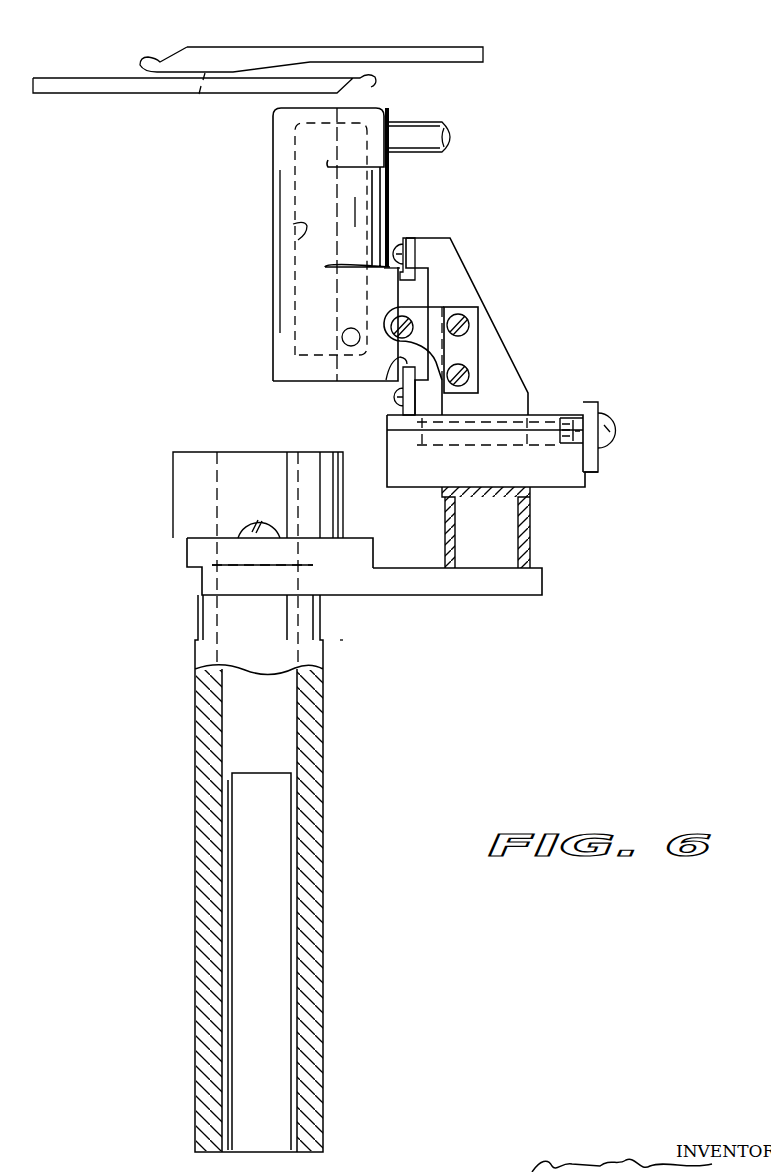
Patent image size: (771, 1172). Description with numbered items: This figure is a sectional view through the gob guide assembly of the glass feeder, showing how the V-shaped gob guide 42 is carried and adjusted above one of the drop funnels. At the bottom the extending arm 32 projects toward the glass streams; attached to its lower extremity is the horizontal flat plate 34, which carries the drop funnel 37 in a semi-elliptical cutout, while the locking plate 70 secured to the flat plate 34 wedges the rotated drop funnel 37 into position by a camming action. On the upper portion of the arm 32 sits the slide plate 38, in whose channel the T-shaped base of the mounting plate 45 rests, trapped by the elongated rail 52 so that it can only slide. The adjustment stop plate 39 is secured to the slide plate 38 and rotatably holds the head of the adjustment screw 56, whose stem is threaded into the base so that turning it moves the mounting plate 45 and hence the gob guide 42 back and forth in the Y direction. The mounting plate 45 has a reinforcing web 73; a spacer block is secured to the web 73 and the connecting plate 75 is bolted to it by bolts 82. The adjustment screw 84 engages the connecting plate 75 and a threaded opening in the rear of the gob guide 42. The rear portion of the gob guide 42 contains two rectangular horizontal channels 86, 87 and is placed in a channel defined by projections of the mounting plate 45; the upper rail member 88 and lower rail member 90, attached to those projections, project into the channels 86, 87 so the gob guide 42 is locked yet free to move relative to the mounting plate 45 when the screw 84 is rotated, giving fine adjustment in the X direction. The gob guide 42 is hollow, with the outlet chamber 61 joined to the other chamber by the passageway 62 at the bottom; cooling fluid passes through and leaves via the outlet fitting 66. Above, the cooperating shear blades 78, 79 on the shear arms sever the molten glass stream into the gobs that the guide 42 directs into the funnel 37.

The extending arm 32 is at (527, 543).
The horizontal flat plate 34 is at (430, 596).
The drop funnel 37 is at (180, 480).
The slide plate 38 is at (568, 480).
The adjustment stop plate 39 is at (600, 408).
The V-shaped gob guide 42 is at (272, 182).
The mounting plate 45 is at (425, 238).
The elongated rail 52 is at (542, 417).
The adjustment screw 56 is at (613, 438).
The chamber 61 is at (293, 228).
The passageway 62 is at (357, 337).
The outlet fitting 66 is at (430, 137).
The locking plate 70 is at (207, 555).
The web 73 is at (513, 348).
The connecting plate 75 is at (480, 307).
The shear blade 78 is at (57, 93).
The shear blade 79 is at (453, 55).
The bolt 82 is at (470, 328).
The adjustment screw 84 is at (417, 325).
The rectangular horizontal channel 86 is at (403, 270).
The rectangular horizontal channel 87 is at (392, 378).
The upper rail member 88 is at (405, 240).
The lower rail member 90 is at (405, 410).